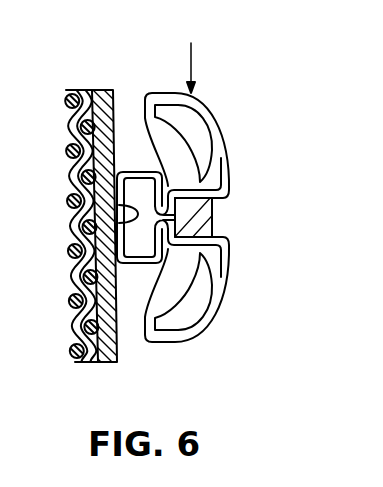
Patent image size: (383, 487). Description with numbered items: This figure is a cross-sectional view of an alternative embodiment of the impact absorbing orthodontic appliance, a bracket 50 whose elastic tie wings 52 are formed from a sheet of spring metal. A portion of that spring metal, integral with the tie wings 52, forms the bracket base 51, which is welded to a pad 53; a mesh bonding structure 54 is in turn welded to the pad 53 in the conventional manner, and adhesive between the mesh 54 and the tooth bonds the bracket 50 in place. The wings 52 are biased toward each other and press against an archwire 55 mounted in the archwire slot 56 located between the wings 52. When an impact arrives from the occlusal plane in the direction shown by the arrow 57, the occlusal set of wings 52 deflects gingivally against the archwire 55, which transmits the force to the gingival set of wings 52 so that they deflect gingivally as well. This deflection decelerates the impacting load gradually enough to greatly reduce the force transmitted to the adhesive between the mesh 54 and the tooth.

The bracket 50 is at (159, 194).
The bracket base 51 is at (150, 222).
The elastic tie wings 52 is at (219, 120).
The pad 53 is at (113, 363).
The mesh bonding structure 54 is at (72, 331).
The archwire 55 is at (216, 220).
The archwire slot 56 is at (216, 202).
The arrow 57 is at (193, 53).